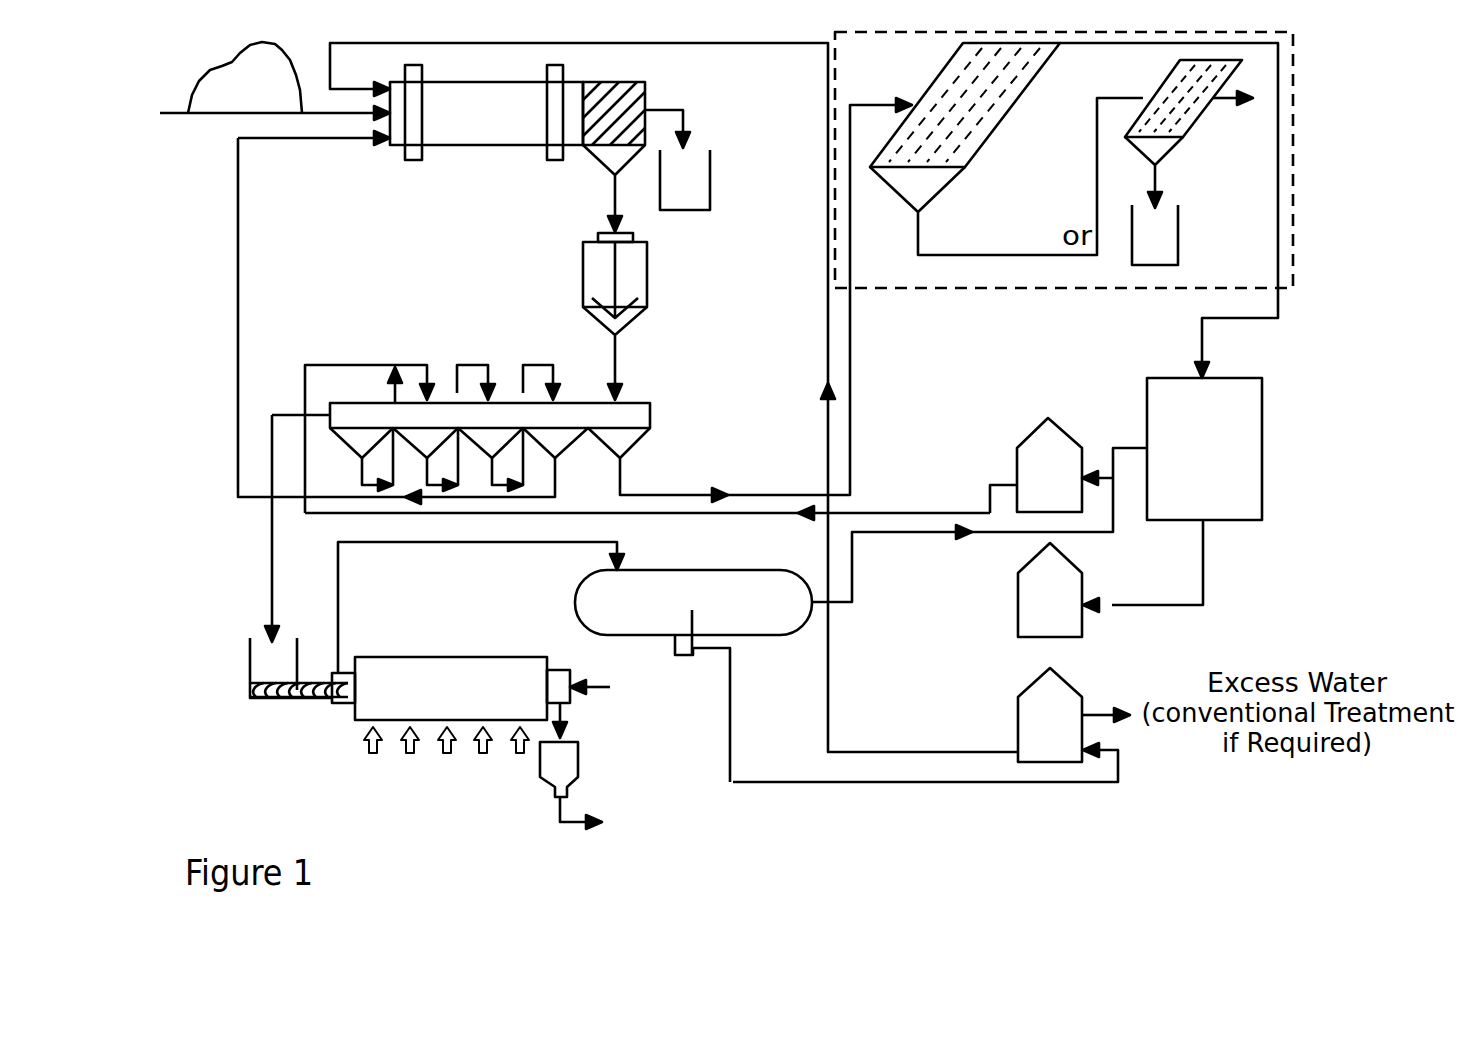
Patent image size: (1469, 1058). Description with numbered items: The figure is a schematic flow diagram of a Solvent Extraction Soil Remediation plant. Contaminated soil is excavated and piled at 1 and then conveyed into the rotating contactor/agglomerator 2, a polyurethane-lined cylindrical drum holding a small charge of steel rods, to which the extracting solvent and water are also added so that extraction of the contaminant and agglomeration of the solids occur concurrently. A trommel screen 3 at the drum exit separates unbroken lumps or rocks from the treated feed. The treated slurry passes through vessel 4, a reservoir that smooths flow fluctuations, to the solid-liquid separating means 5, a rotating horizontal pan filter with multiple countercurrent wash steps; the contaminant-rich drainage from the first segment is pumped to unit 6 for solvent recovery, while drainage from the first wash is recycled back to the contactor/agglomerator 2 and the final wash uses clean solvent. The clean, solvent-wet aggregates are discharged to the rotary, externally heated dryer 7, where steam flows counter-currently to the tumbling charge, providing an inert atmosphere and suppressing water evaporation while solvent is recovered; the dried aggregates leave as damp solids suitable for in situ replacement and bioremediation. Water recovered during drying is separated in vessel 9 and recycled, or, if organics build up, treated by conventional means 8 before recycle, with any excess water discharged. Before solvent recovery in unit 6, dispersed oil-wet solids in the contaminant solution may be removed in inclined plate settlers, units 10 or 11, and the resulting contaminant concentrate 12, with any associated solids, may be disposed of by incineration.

The excavated contaminated soil pile 1 is at (220, 117).
The rotating contactor/agglomerator 2 is at (480, 145).
The trommel screen 3 is at (647, 97).
The vessel 4 is at (648, 285).
The solid-liquid separating means 5 is at (650, 415).
The solvent recovery unit 6 is at (1247, 520).
The rotary externally heated dryer 7 is at (475, 655).
The conventional water treatment means 8 is at (1018, 720).
The water separation vessel 9 is at (575, 600).
The inclined plate settler 10 is at (1003, 120).
The inclined plate settler 11 is at (1185, 137).
The contaminant concentrate 12 is at (1018, 607).